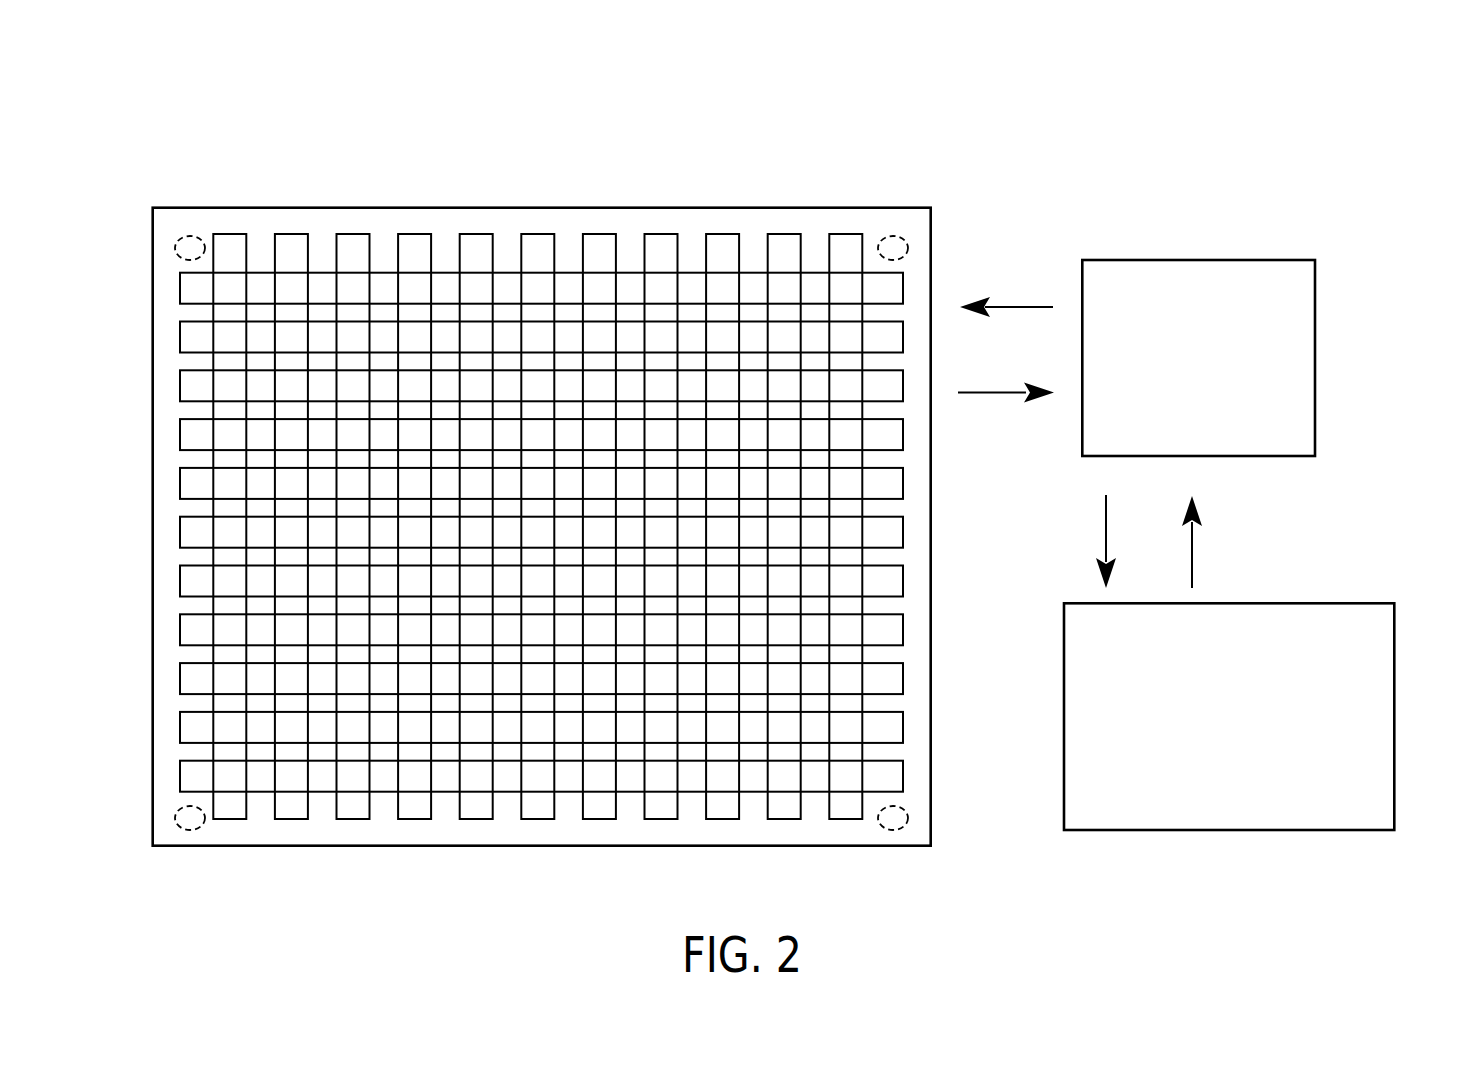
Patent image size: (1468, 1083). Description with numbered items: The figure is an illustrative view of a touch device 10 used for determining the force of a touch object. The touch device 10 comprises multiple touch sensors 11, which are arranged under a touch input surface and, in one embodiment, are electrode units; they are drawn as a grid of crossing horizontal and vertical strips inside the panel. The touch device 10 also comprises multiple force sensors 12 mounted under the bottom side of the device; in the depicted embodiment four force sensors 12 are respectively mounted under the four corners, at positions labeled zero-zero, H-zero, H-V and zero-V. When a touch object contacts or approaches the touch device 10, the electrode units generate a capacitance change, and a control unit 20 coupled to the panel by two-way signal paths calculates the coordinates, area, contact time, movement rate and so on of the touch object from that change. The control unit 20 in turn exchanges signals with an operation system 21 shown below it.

The touch device 10 is at (710, 185).
The touch sensors 11 is at (473, 243).
The force sensors 12 is at (195, 246).
The control unit 20 is at (1315, 317).
The operation system 21 is at (1313, 603).